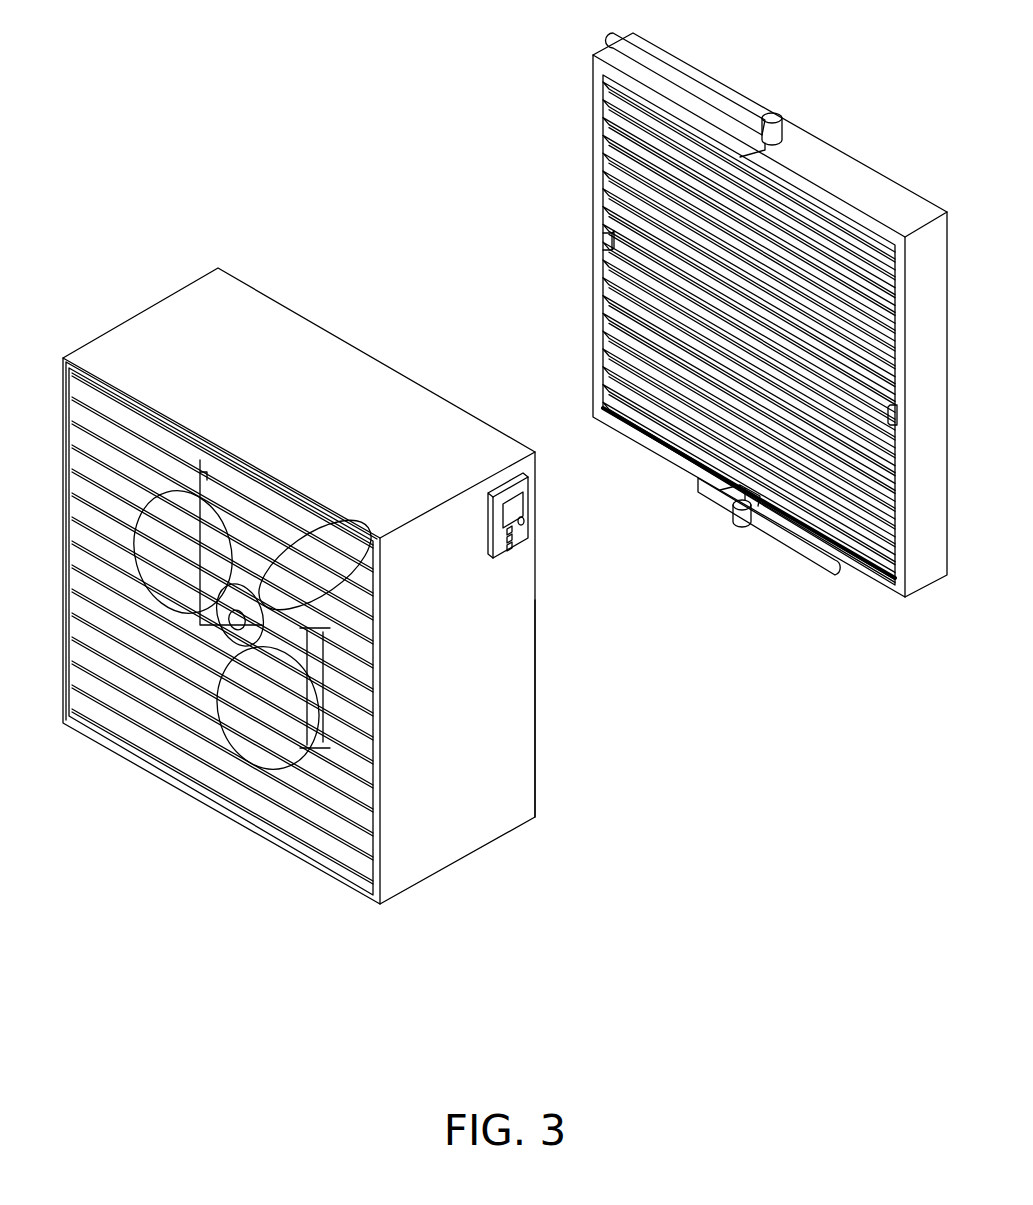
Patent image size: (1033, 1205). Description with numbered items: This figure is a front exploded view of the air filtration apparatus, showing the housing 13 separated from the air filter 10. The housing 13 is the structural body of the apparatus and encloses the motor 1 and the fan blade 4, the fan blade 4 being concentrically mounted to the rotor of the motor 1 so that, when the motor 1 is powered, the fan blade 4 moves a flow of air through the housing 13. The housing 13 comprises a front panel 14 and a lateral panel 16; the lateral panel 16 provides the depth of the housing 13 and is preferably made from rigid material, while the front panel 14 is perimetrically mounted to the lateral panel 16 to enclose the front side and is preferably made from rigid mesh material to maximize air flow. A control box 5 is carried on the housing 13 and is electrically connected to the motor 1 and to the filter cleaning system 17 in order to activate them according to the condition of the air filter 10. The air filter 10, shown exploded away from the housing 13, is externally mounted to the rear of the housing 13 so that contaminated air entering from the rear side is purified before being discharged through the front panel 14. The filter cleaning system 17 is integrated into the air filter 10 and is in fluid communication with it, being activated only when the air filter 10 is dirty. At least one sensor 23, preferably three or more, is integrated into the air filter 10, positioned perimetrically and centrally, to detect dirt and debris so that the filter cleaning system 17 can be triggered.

The motor 1 is at (340, 545).
The fan blade 4 is at (227, 473).
The control box 5 is at (540, 527).
The air filter 10 is at (593, 172).
The housing 13 is at (552, 798).
The front panel 14 is at (75, 722).
The lateral panel 16 is at (434, 864).
The filter cleaning system 17 is at (790, 570).
The sensor 23 is at (758, 165).